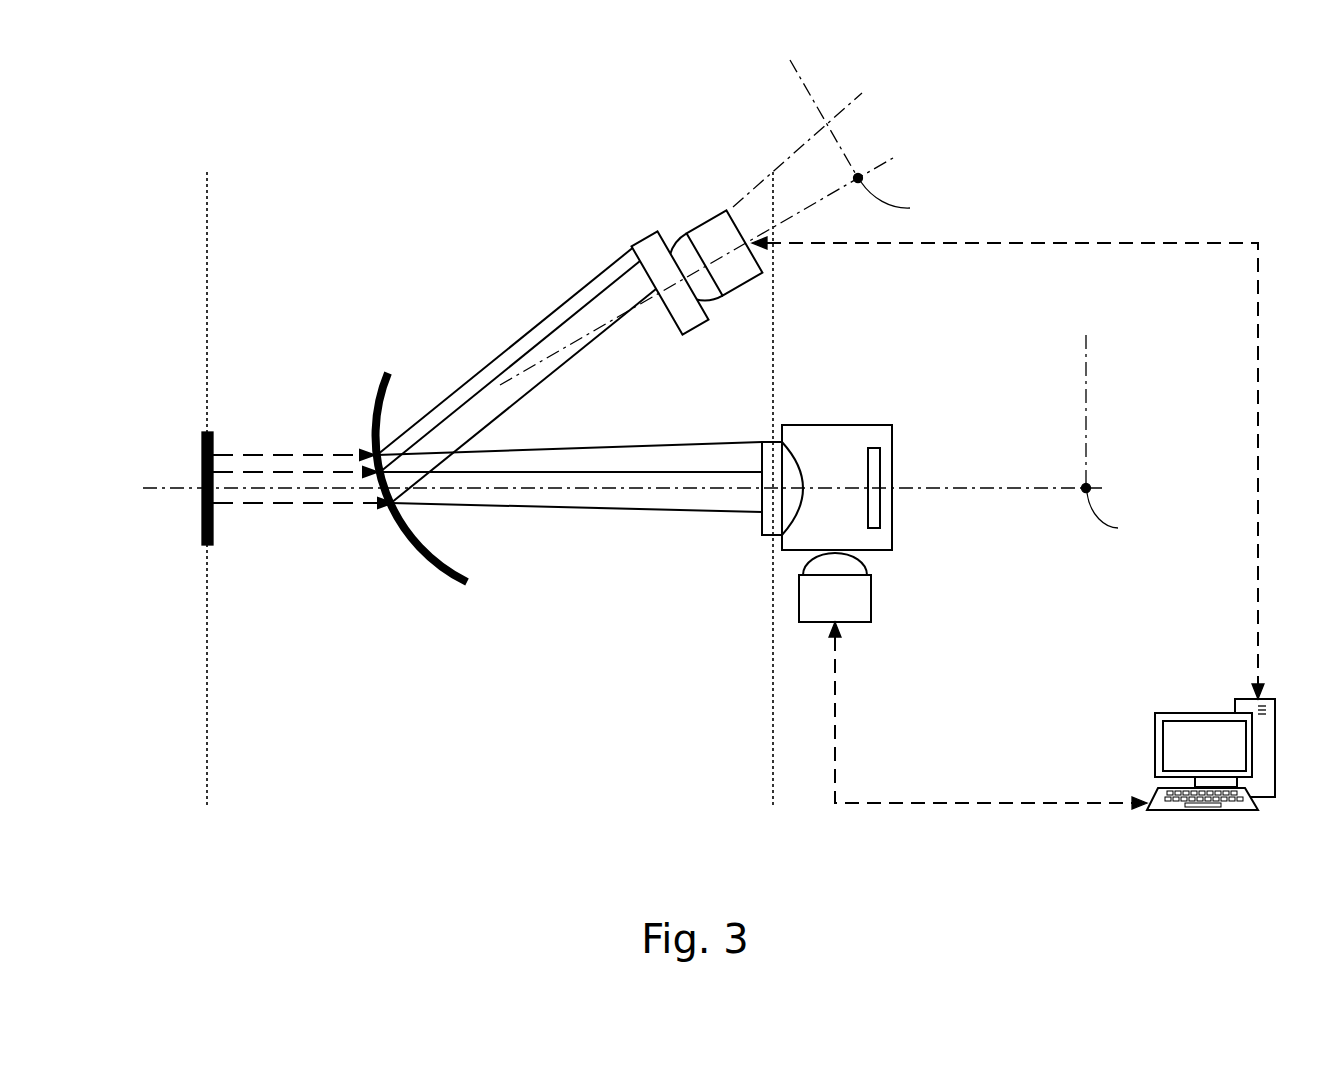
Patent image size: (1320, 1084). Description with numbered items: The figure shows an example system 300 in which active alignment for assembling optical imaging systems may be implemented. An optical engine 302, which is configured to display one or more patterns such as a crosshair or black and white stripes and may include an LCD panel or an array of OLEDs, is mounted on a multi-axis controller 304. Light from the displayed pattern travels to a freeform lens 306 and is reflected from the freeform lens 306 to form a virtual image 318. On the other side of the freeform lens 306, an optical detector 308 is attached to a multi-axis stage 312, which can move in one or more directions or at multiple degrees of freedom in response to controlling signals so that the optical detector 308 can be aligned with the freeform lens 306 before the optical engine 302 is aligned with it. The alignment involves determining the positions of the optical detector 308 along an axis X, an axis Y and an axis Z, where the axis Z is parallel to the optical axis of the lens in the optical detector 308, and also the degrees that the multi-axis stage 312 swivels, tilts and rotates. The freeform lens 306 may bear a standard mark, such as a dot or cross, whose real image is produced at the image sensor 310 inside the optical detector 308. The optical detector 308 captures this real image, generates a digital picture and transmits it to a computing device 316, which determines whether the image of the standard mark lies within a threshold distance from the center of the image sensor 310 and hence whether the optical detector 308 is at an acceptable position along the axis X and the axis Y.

The example system 300 is at (223, 75).
The optical engine 302 is at (636, 243).
The multi-axis controller 304 is at (705, 230).
The freeform lens 306 is at (368, 418).
The optical detector 308 is at (893, 431).
The image sensor 310 is at (857, 425).
The multi-axis stage 312 is at (858, 623).
The computing device 316 is at (1243, 810).
The virtual image 318 is at (202, 518).